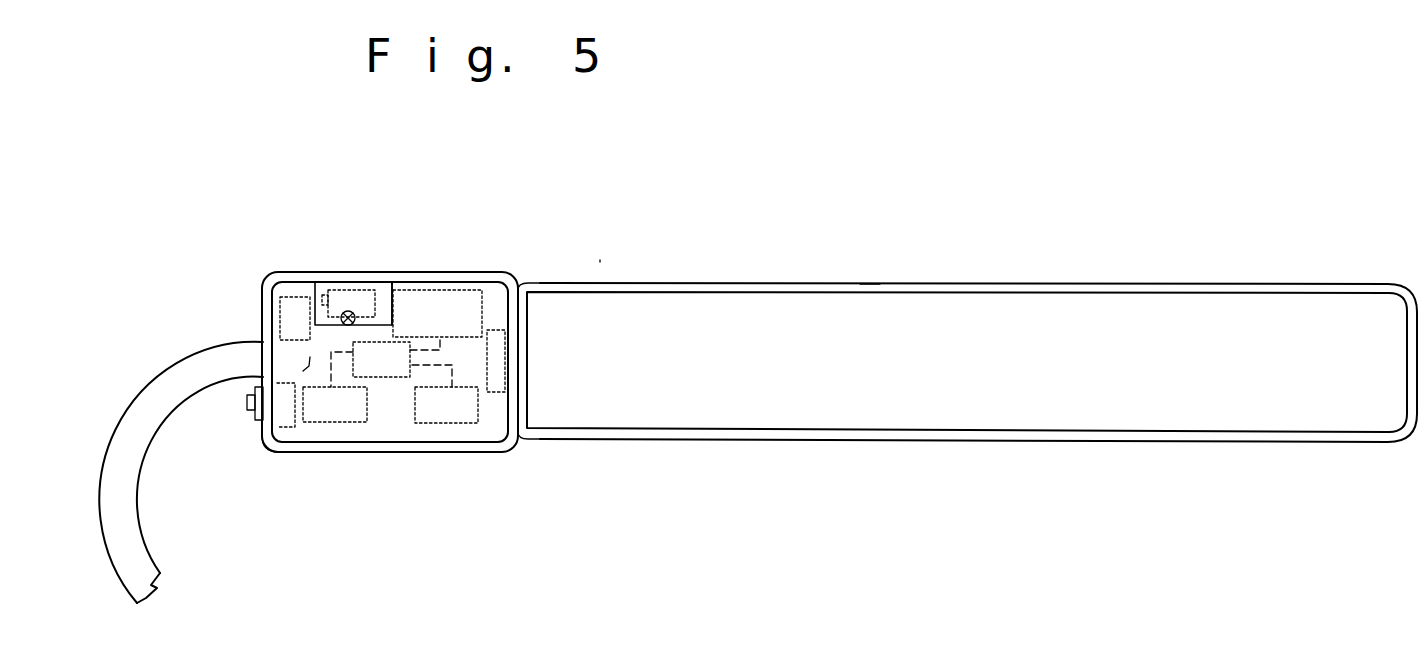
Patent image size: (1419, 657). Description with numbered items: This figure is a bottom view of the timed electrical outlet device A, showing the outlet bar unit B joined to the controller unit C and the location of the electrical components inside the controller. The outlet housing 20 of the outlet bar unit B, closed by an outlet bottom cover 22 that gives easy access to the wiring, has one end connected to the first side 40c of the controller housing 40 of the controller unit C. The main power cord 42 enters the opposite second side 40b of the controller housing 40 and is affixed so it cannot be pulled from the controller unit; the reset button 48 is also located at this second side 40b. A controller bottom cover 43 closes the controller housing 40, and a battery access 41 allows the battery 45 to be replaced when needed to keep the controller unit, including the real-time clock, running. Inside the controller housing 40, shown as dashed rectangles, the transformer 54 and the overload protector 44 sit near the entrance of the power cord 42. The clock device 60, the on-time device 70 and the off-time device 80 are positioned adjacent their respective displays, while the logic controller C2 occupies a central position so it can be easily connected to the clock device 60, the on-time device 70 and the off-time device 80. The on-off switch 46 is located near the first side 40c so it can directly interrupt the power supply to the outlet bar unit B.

The outlet housing 20 is at (868, 440).
The outlet bottom cover 22 is at (928, 372).
The controller housing 40 is at (295, 271).
The second side 40b is at (260, 433).
The first side 40c is at (530, 316).
The battery access 41 is at (392, 308).
The main power cord 42 is at (157, 383).
The controller bottom cover 43 is at (305, 368).
The overload protector 44 is at (290, 427).
The battery 45 is at (337, 290).
The on-off switch 46 is at (507, 360).
The reset button 48 is at (247, 403).
The transformer 54 is at (280, 300).
The clock device 60 is at (482, 290).
The on-time device 70 is at (358, 422).
The off-time device 80 is at (462, 423).
The timed electrical outlet device A is at (620, 225).
The outlet bar unit B is at (872, 273).
The controller unit C is at (464, 266).
The logic controller C2 is at (388, 378).